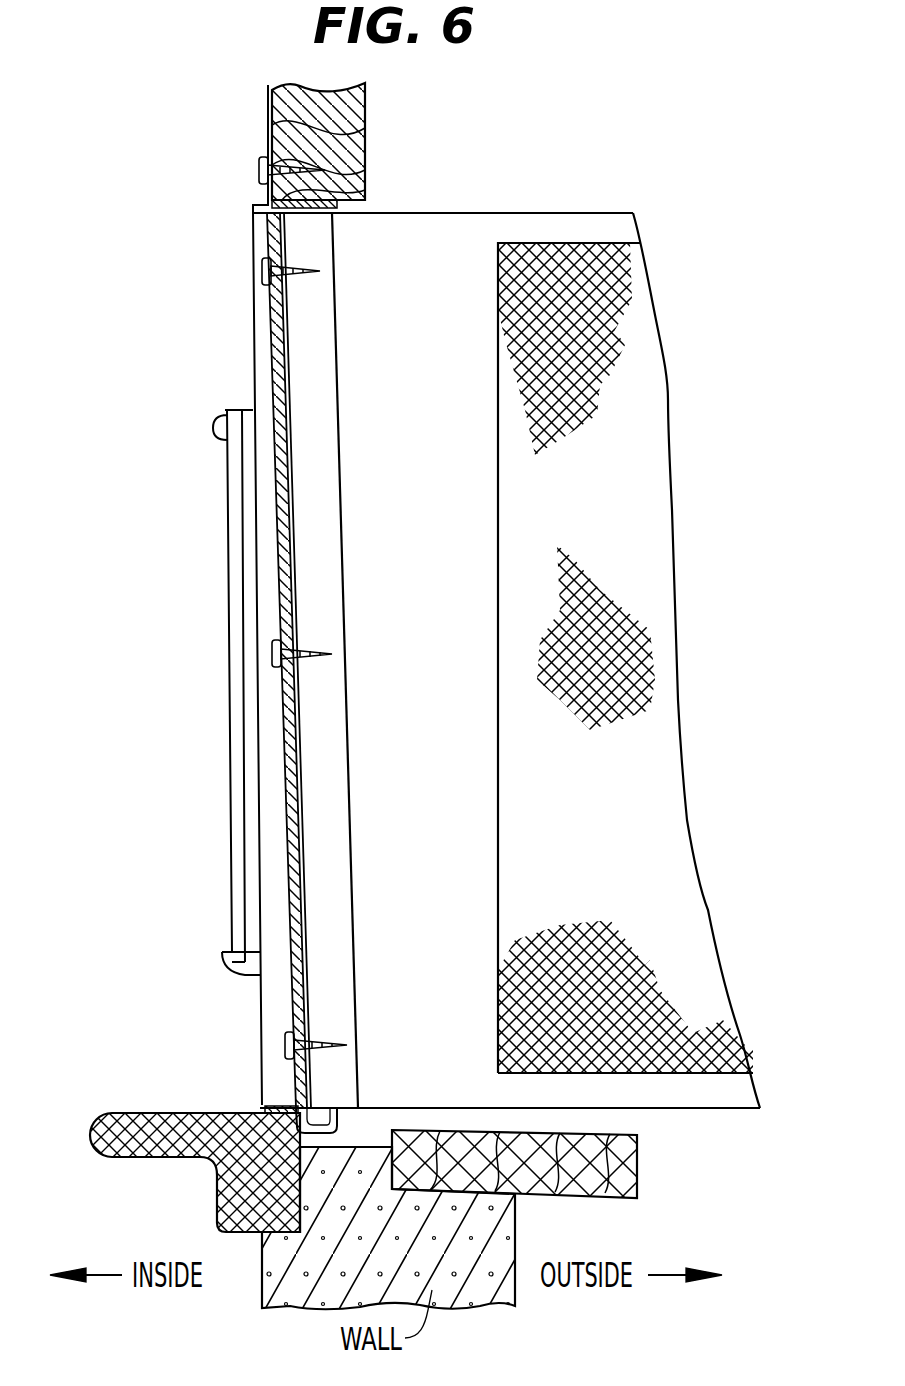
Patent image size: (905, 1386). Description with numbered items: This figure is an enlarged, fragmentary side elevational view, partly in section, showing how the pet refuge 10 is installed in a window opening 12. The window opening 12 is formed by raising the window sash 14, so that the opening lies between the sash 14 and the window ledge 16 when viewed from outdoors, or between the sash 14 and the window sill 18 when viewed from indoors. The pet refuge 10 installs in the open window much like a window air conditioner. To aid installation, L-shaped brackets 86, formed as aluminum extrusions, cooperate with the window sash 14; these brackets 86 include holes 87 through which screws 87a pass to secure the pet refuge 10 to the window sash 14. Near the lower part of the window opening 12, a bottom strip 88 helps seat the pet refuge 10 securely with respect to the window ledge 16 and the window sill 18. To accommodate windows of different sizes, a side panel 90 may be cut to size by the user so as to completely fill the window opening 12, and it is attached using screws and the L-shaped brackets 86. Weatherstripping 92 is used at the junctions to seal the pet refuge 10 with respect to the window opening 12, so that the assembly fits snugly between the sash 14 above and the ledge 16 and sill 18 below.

The pet refuge 10 is at (506, 627).
The window opening 12 is at (385, 212).
The window sash 14 is at (272, 108).
The window ledge 16 is at (632, 1187).
The window sill 18 is at (110, 1113).
The L-shaped bracket 86 is at (263, 202).
The hole 87 is at (269, 160).
The screw 87a is at (259, 172).
The bottom strip 88 is at (335, 1108).
The side panel 90 is at (283, 700).
The weatherstripping 92 is at (328, 197).